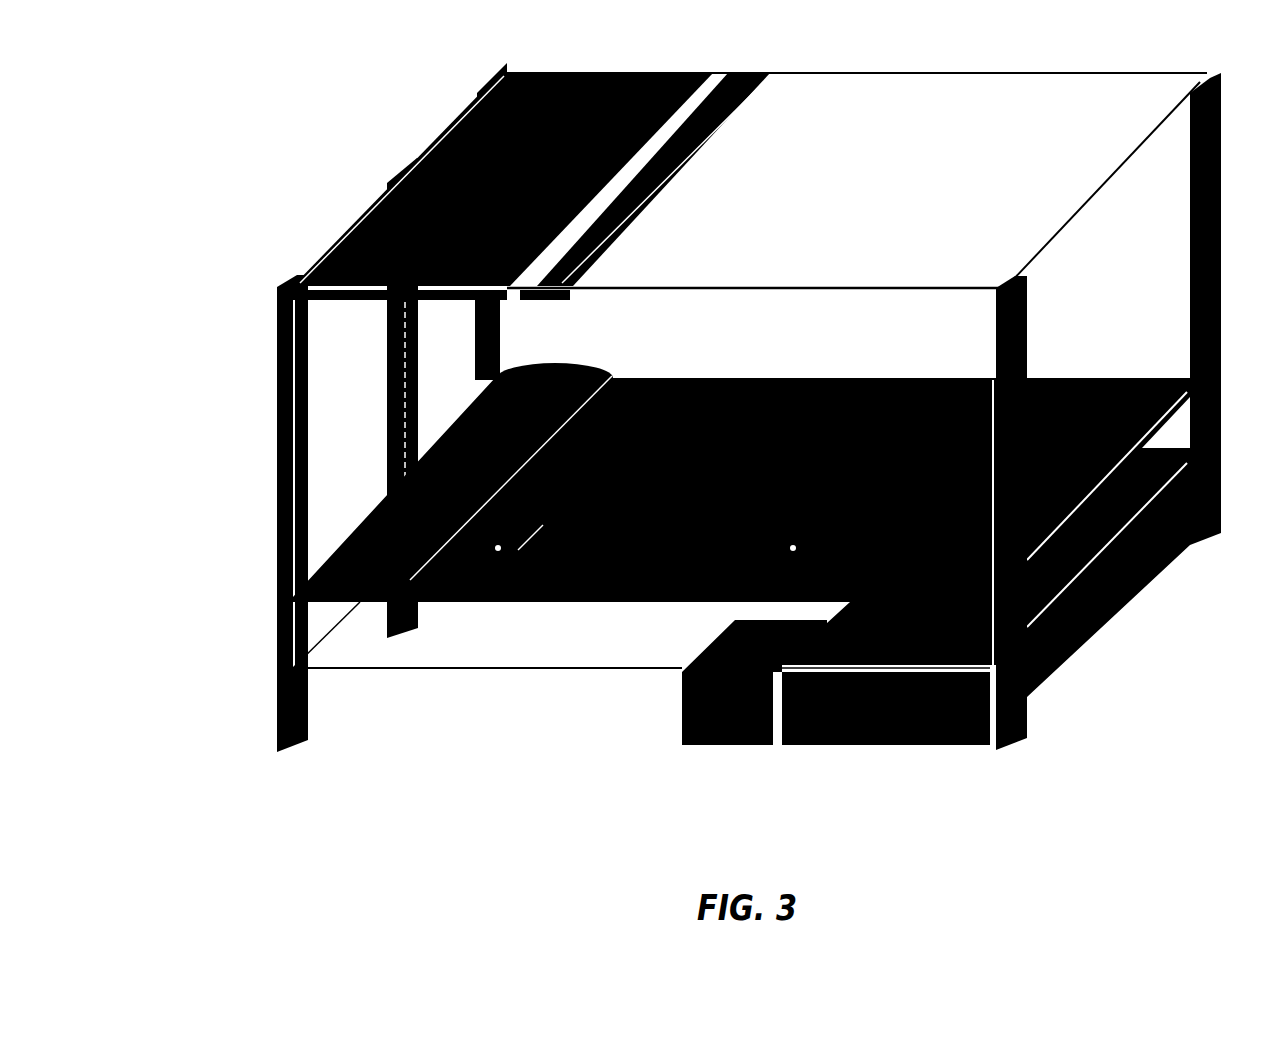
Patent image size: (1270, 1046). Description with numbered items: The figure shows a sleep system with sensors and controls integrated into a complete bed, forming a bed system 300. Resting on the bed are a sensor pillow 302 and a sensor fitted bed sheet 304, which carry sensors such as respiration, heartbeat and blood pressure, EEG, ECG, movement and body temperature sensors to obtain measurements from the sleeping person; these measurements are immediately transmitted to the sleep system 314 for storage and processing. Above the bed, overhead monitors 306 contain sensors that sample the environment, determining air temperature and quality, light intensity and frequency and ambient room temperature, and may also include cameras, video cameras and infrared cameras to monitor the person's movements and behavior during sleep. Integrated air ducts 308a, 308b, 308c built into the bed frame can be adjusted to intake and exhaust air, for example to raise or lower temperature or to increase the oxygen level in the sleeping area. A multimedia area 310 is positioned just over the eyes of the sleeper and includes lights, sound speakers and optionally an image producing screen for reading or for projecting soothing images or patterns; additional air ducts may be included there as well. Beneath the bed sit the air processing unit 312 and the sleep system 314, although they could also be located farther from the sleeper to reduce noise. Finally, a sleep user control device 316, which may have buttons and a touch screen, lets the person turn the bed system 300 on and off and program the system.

The bed system 300 is at (703, 356).
The sensor pillow 302 is at (407, 503).
The sensor fitted bed sheet 304 is at (805, 490).
The overhead monitors 306 is at (645, 160).
The integrated air duct 308a is at (239, 513).
The integrated air duct 308b is at (407, 397).
The integrated air duct 308c is at (493, 372).
The multimedia area 310 is at (398, 232).
The air processing unit 312 is at (886, 739).
The sleep system 314 is at (812, 700).
The sleep user control device 316 is at (530, 560).